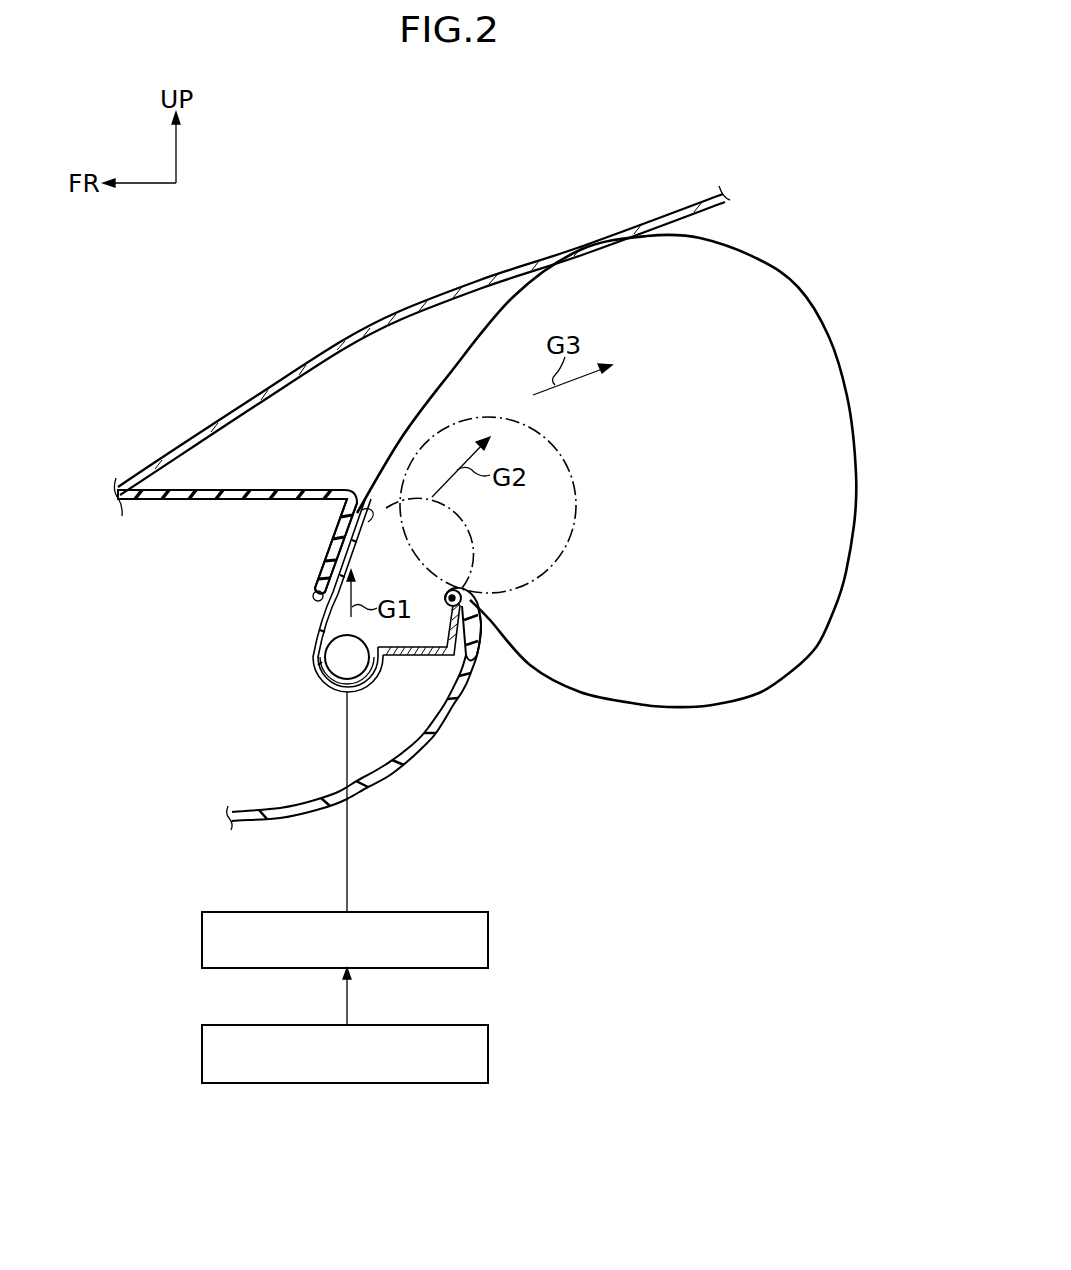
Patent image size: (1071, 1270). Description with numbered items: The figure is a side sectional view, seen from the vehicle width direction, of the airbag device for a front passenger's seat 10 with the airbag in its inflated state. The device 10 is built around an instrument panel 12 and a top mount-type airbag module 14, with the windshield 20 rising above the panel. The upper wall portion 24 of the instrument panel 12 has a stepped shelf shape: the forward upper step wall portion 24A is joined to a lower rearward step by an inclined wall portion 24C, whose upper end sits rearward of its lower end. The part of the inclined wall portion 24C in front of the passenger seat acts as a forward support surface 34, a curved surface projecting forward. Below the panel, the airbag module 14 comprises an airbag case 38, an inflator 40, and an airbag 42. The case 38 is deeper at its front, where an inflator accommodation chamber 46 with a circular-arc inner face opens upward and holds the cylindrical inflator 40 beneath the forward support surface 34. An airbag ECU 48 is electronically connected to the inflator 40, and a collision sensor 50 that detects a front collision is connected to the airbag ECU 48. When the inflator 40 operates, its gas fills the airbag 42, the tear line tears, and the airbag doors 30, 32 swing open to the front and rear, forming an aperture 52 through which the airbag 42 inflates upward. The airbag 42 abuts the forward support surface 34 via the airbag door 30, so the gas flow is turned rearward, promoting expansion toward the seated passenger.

The airbag device for a front passenger's seat 10 is at (610, 765).
The instrument panel 12 is at (424, 754).
The airbag module 14 is at (262, 663).
The windshield 20 is at (347, 340).
The upper wall portion 24 is at (290, 489).
The upper step wall portion 24A is at (226, 489).
The inclined wall portion 24C is at (328, 540).
The airbag door 30 is at (322, 573).
The airbag door 32 is at (471, 653).
The forward support surface 34 is at (373, 503).
The airbag case 38 is at (415, 656).
The inflator 40 is at (334, 633).
The airbag 42 is at (708, 705).
The inflator accommodation chamber 46 is at (325, 660).
The airbag ECU 48 is at (490, 940).
The collision sensor 50 is at (490, 1057).
The aperture 52 is at (447, 595).